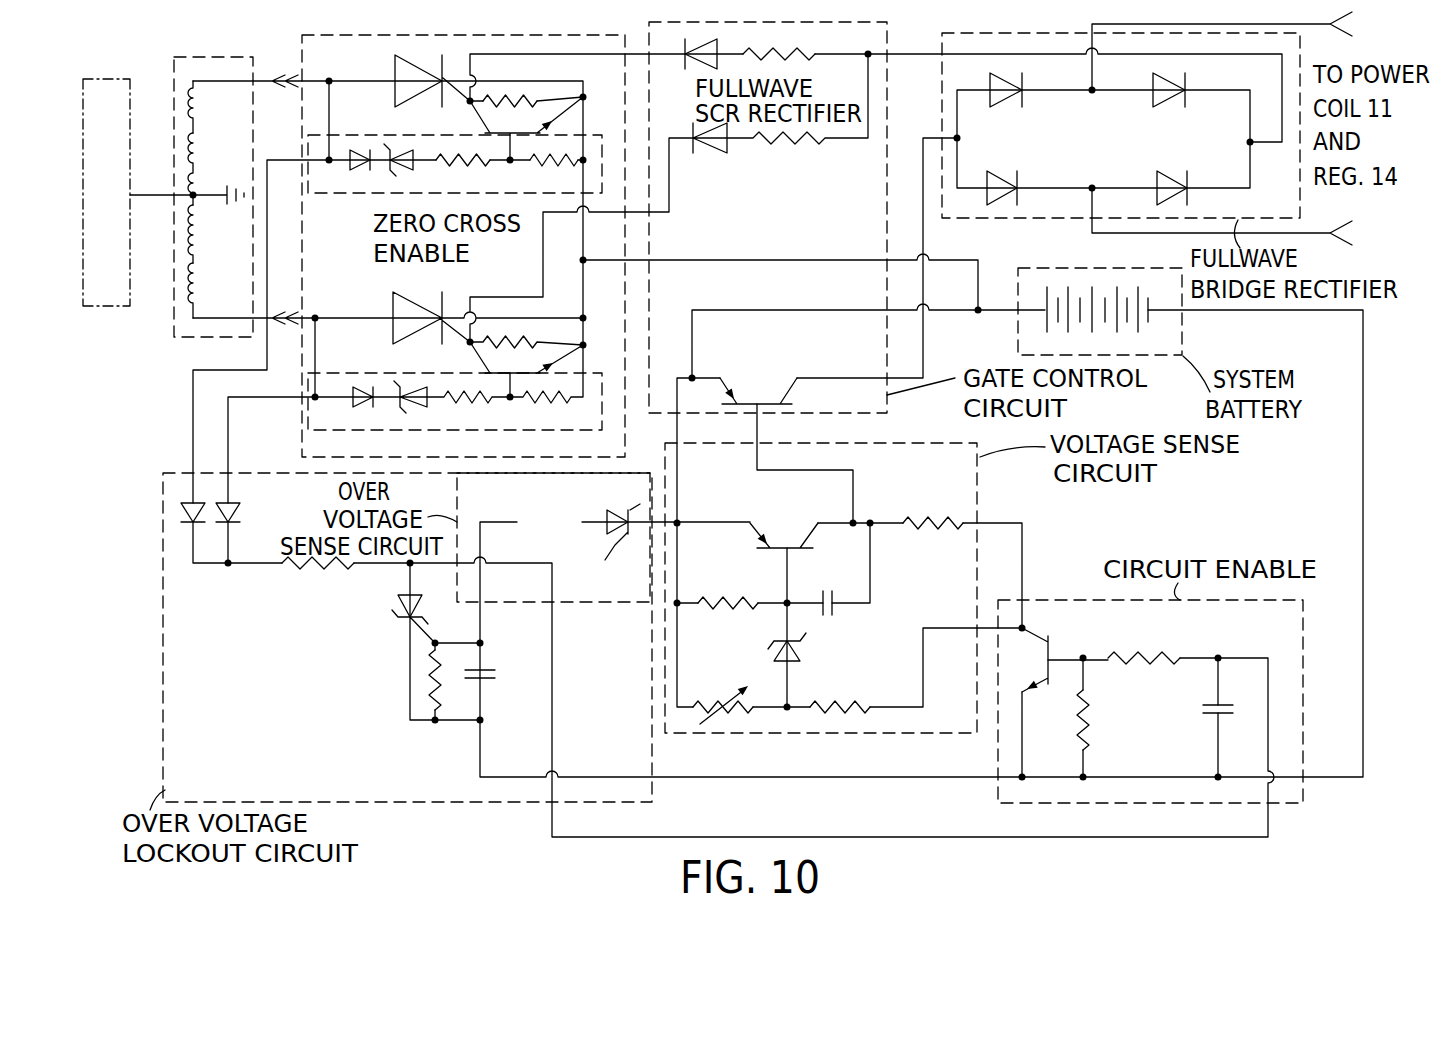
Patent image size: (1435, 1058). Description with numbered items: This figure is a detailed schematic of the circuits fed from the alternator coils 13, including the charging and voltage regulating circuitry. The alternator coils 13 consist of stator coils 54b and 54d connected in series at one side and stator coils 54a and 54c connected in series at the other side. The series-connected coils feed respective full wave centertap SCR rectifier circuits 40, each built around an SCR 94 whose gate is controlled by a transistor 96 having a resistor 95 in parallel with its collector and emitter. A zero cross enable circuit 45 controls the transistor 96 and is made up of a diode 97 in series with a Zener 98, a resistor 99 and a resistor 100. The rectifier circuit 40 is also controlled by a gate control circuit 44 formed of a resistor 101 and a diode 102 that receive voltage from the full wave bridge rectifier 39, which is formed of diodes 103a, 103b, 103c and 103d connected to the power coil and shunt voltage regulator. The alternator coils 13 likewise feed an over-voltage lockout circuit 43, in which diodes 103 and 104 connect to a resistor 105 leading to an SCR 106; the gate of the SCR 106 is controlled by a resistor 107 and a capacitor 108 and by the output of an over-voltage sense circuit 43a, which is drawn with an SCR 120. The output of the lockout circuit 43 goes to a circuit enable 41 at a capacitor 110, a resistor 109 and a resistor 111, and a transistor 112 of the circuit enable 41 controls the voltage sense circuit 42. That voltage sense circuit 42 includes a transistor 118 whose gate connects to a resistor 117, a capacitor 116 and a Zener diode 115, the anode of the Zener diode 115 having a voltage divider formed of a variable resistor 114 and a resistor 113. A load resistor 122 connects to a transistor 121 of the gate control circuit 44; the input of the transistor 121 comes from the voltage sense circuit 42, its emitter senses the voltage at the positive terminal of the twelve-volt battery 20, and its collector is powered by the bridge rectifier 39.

The alternator coils 13 is at (208, 57).
The stator coil 54b is at (185, 106).
The stator coil 54d is at (185, 176).
The stator coil 54a is at (185, 228).
The stator coil 54c is at (185, 292).
The SCR 94 is at (395, 65).
The resistor 95 is at (535, 95).
The transistor 96 is at (485, 128).
The diode 97 is at (353, 148).
The Zener 98 is at (400, 170).
The resistor 99 is at (465, 168).
The resistor 100 is at (540, 168).
The zero cross enable circuit 45 is at (318, 195).
The full wave centertap SCR rectifier circuit 40 is at (626, 118).
The diode 102 is at (685, 52).
The resistor 101 is at (783, 48).
The gate control circuit 44 is at (887, 397).
The full wave bridge rectifier 39 is at (1045, 220).
The diode 103a is at (1003, 105).
The diode 103b is at (1168, 105).
The diode 103c is at (1003, 176).
The diode 103d is at (1175, 178).
The battery 20 is at (1185, 343).
The transistor 121 is at (787, 392).
The voltage sense circuit 42 is at (980, 492).
The load resistor 122 is at (918, 520).
The transistor 118 is at (808, 538).
The capacitor 116 is at (835, 612).
The Zener diode 115 is at (802, 652).
The resistor 117 is at (728, 612).
The resistor 113 is at (840, 702).
The variable resistor 114 is at (738, 718).
The SCR 120 is at (612, 548).
The over-voltage sense circuit 43a is at (615, 603).
The diode 103 is at (180, 512).
The diode 104 is at (240, 515).
The resistor 105 is at (328, 575).
The SCR 106 is at (398, 608).
The resistor 107 is at (432, 690).
The capacitor 108 is at (488, 680).
The over-voltage lockout circuit 43 is at (163, 755).
The circuit enable 41 is at (1085, 600).
The transistor 112 is at (1040, 638).
The resistor 109 is at (1150, 655).
The capacitor 110 is at (1240, 698).
The resistor 111 is at (1092, 712).